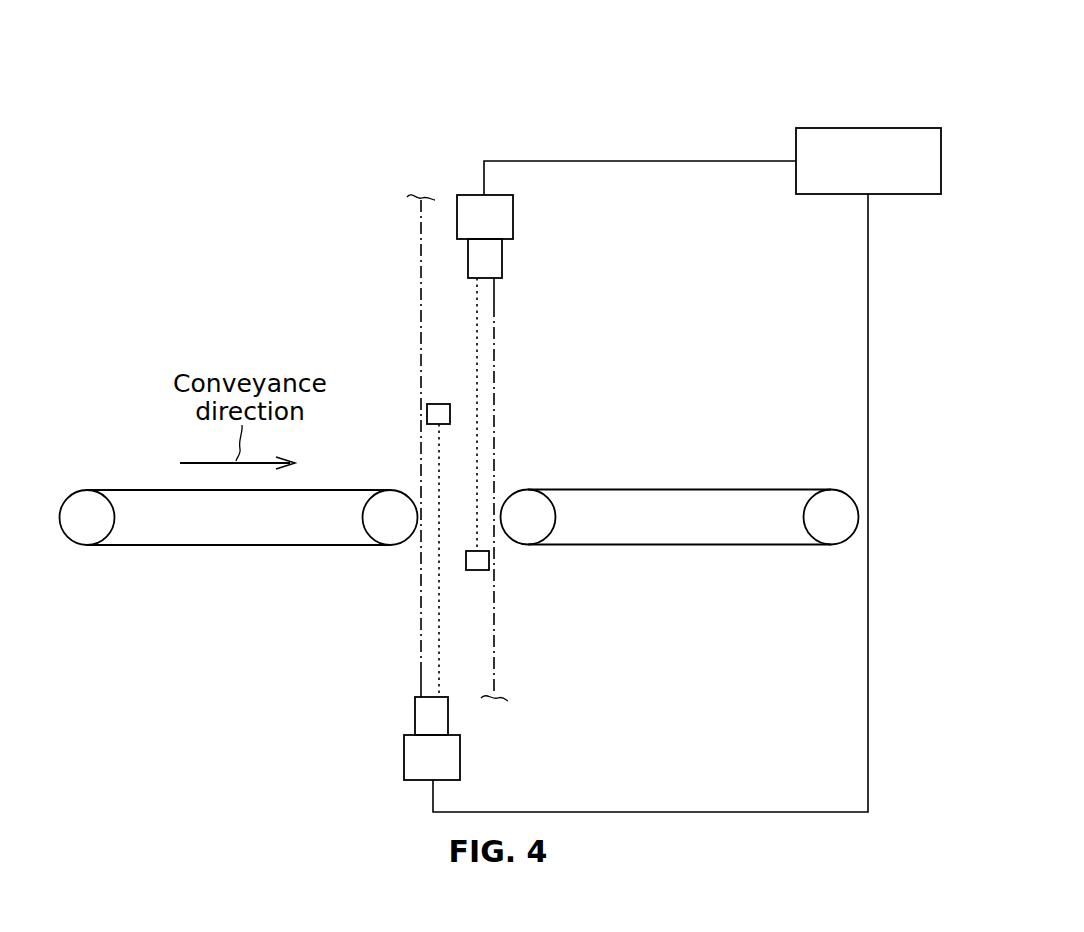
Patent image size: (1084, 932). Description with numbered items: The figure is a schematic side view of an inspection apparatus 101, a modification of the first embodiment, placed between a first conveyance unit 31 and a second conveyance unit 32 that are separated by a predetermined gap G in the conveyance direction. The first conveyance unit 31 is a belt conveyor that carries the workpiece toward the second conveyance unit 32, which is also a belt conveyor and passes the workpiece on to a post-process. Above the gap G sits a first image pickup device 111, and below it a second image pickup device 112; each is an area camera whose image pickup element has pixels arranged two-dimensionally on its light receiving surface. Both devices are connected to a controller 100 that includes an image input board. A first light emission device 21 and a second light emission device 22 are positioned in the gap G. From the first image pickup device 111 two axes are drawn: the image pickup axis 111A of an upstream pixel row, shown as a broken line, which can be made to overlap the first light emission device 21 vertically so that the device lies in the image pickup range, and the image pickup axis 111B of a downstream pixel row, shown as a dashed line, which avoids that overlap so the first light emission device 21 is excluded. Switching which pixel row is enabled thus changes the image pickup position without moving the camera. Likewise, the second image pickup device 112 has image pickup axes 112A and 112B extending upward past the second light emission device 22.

The inspection apparatus 101 is at (352, 90).
The controller 100 is at (866, 128).
The first image pickup device 111 is at (513, 215).
The image pickup axis 111A is at (479, 389).
The image pickup axis 111B is at (496, 341).
The second light emission device 22 is at (438, 404).
The first light emission device 21 is at (478, 570).
The second image pickup device 112 is at (404, 757).
The image pickup axis 112A is at (428, 600).
The image pickup axis 112B is at (421, 656).
The first conveyance unit 31 is at (127, 490).
The second conveyance unit 32 is at (760, 489).
The gap G is at (458, 520).